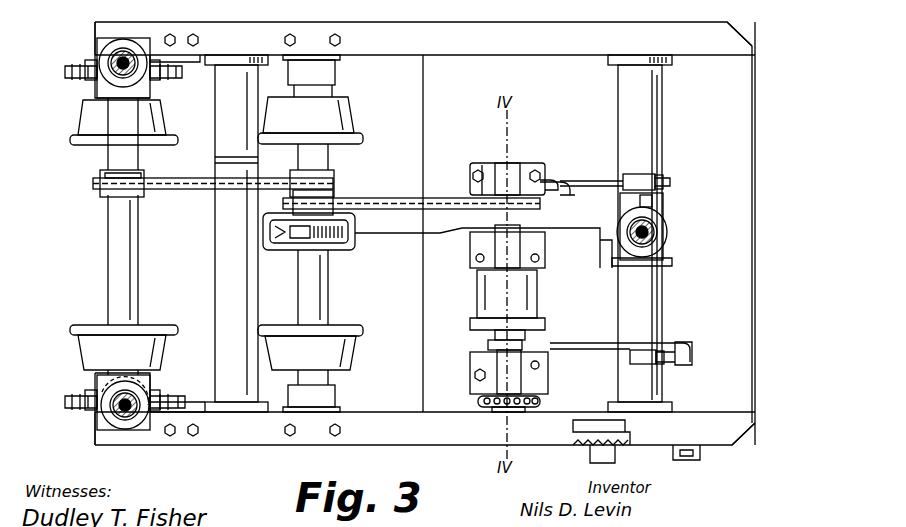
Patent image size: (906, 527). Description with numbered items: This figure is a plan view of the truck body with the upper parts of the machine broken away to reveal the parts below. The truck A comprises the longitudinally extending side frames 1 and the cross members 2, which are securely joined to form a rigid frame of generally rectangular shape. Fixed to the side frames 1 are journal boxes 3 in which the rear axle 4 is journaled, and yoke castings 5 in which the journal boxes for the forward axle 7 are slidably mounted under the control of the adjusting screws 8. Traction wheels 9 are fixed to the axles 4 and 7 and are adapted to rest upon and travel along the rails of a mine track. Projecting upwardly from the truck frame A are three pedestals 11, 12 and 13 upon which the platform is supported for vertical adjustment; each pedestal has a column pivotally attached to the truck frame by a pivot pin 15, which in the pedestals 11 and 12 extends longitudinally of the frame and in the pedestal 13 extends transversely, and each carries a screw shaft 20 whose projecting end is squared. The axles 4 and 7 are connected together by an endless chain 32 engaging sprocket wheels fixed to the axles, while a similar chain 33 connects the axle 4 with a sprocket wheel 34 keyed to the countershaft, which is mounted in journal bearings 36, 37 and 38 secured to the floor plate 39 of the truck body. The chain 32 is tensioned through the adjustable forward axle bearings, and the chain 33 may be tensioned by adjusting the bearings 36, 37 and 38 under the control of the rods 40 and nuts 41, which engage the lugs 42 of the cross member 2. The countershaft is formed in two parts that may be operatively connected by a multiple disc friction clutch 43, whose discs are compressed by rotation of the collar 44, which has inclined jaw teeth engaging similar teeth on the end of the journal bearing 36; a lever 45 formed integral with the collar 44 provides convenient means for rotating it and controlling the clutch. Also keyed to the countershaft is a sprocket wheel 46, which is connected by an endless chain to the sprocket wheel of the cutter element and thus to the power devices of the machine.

The side frame 1 is at (437, 38).
The truck A is at (570, 38).
The cross member 2 is at (226, 96).
The journal box 3 is at (322, 72).
The rear axle 4 is at (329, 291).
The yoke casting 5 is at (152, 35).
The forward axle 7 is at (118, 251).
The adjusting screw 8 is at (65, 62).
The traction wheel 9 is at (85, 139).
The pedestal 11 is at (123, 50).
The pedestal 12 is at (125, 428).
The pedestal 13 is at (666, 230).
The pivot pin 15 is at (92, 80).
The screw shaft 20 is at (100, 390).
The endless chain 32 is at (191, 190).
The chain 33 is at (388, 198).
The sprocket wheel 34 is at (500, 192).
The journal bearing 36 is at (471, 370).
The journal bearing 37 is at (532, 248).
The journal bearing 38 is at (526, 168).
The floor plate 39 is at (738, 141).
The rod 40 is at (572, 180).
The nut 41 is at (624, 178).
The lug 42 is at (635, 176).
The multiple disc friction clutch 43 is at (540, 292).
The collar 44 is at (497, 332).
The lever 45 is at (490, 344).
The sprocket wheel 46 is at (482, 404).